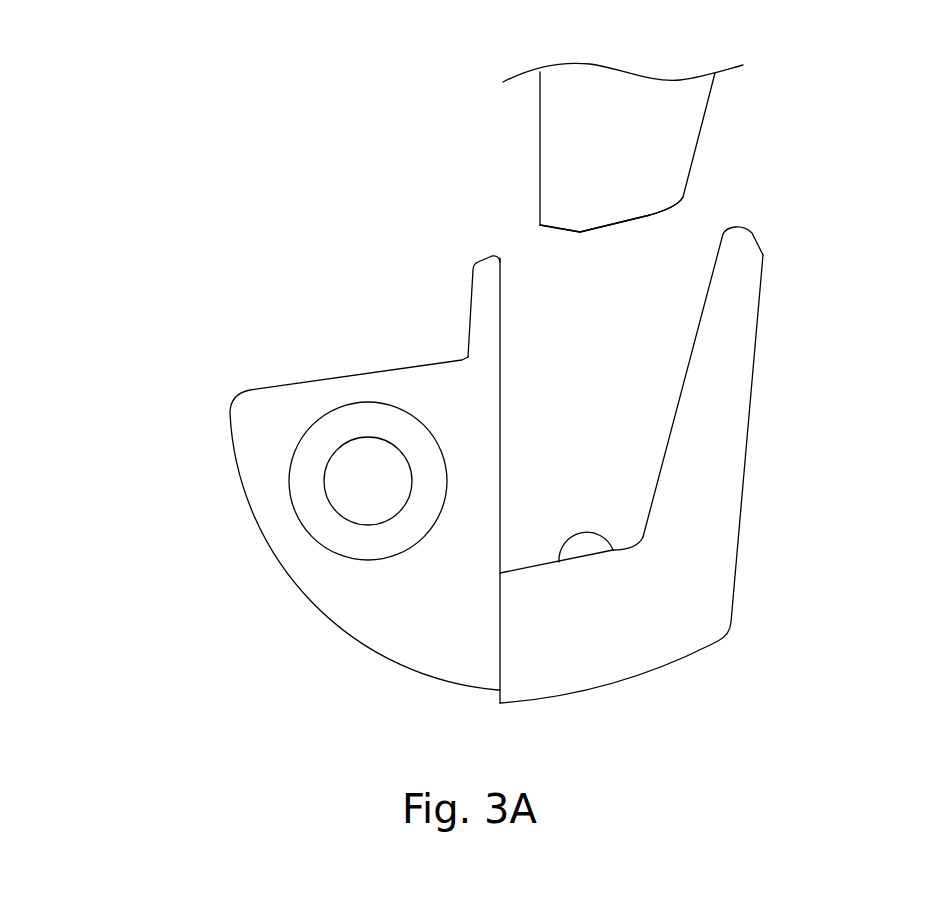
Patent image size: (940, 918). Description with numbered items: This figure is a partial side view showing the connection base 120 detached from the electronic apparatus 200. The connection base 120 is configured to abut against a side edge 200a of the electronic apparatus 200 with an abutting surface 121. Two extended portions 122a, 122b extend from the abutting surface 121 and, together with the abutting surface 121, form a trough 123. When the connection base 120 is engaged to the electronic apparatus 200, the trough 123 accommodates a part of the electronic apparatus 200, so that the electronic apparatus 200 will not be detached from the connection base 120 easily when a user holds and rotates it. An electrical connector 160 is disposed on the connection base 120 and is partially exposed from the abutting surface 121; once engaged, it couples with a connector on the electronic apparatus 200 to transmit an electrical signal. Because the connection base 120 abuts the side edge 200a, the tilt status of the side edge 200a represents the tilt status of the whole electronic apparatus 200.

The connection base 120 is at (504, 448).
The abutting surface 121 is at (620, 545).
The extended portion 122a is at (728, 370).
The extended portion 122b is at (485, 308).
The trough 123 is at (517, 263).
The electrical connector 160 is at (582, 543).
The electronic apparatus 200 is at (677, 147).
The side edge 200a is at (615, 228).